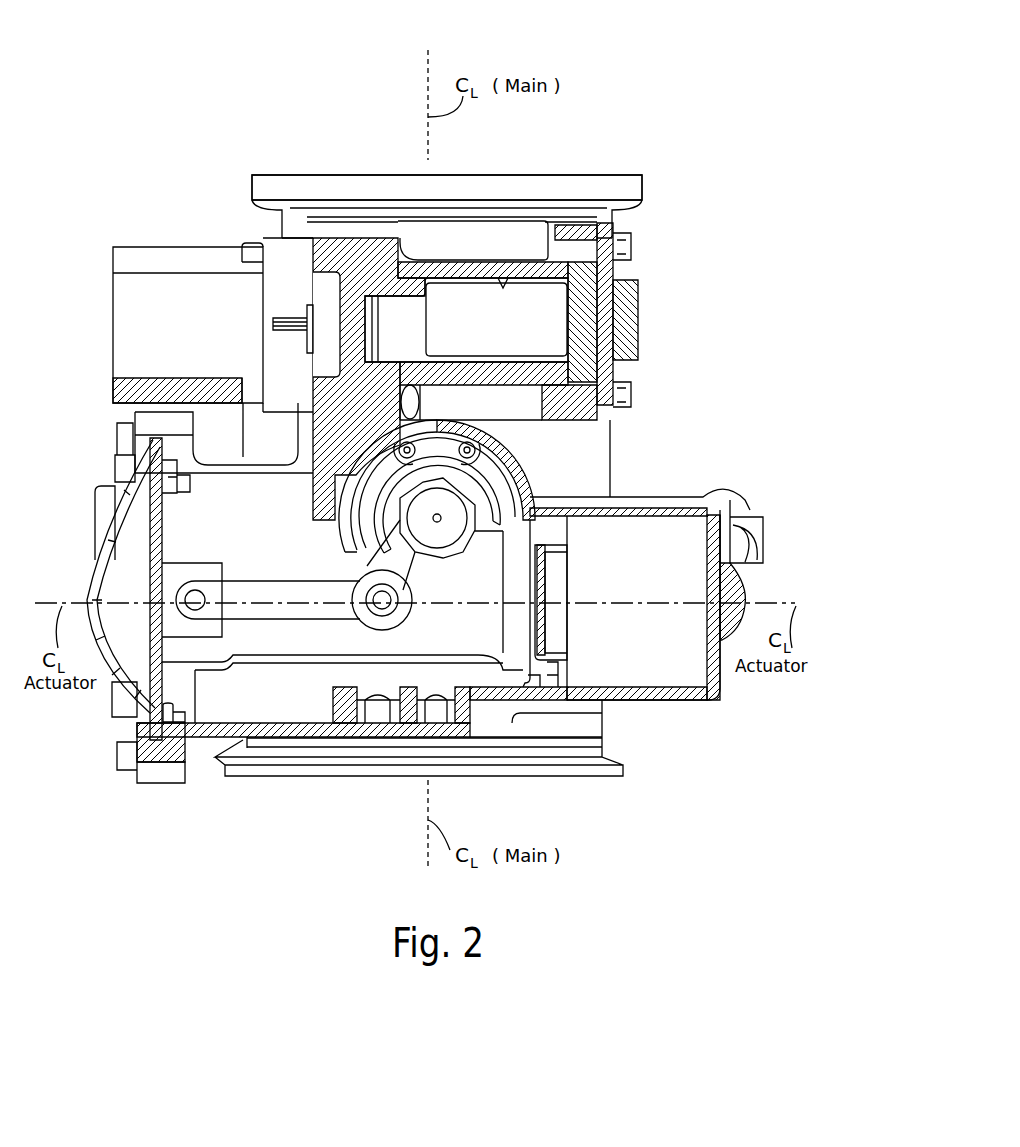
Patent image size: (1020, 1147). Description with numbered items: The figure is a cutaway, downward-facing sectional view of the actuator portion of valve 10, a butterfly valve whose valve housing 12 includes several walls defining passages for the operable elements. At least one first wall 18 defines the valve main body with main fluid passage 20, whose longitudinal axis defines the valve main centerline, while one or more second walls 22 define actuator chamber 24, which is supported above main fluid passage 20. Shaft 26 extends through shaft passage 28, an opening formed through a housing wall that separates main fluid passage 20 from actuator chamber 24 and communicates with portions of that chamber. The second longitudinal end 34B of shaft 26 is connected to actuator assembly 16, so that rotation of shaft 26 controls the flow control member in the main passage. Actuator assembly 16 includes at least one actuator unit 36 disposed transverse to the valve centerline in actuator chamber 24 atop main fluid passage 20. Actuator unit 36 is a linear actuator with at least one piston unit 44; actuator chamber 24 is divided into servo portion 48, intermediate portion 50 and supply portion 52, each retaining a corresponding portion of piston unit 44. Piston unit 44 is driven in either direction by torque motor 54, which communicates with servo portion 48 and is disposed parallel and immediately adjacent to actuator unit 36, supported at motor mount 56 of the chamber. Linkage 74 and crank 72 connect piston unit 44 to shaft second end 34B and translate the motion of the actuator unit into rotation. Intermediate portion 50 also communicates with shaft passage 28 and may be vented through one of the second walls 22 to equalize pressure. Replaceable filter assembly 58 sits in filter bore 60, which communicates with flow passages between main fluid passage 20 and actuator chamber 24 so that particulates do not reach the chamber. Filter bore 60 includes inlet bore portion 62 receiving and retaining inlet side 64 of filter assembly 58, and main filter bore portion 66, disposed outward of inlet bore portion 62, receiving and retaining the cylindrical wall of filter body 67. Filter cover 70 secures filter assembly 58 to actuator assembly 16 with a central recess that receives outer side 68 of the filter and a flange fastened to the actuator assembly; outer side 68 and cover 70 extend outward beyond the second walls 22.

The valve 10 is at (646, 90).
The valve housing 12 is at (242, 193).
The actuator assembly 16 is at (695, 273).
The first wall 18 is at (483, 240).
The main fluid passage 20 is at (378, 176).
The second wall 22 is at (722, 500).
The actuator chamber 24 is at (218, 700).
The shaft 26 is at (612, 482).
The shaft passage 28 is at (560, 458).
The second longitudinal end 34B is at (433, 520).
The actuator unit 36 is at (123, 576).
The piston unit 44 is at (180, 682).
The servo portion 48 is at (132, 523).
The intermediate portion 50 is at (445, 630).
The supply portion 52 is at (565, 635).
The torque motor 54 is at (168, 331).
The motor mount 56 is at (178, 268).
The filter assembly 58 is at (462, 322).
The filter bore 60 is at (505, 283).
The inlet bore portion 62 is at (328, 332).
The inlet side 64 is at (385, 310).
The main filter bore portion 66 is at (488, 368).
The filter body 67 is at (530, 330).
The outer side 68 is at (607, 313).
The filter cover 70 is at (590, 318).
The crank 72 is at (427, 568).
The linkage 74 is at (372, 618).